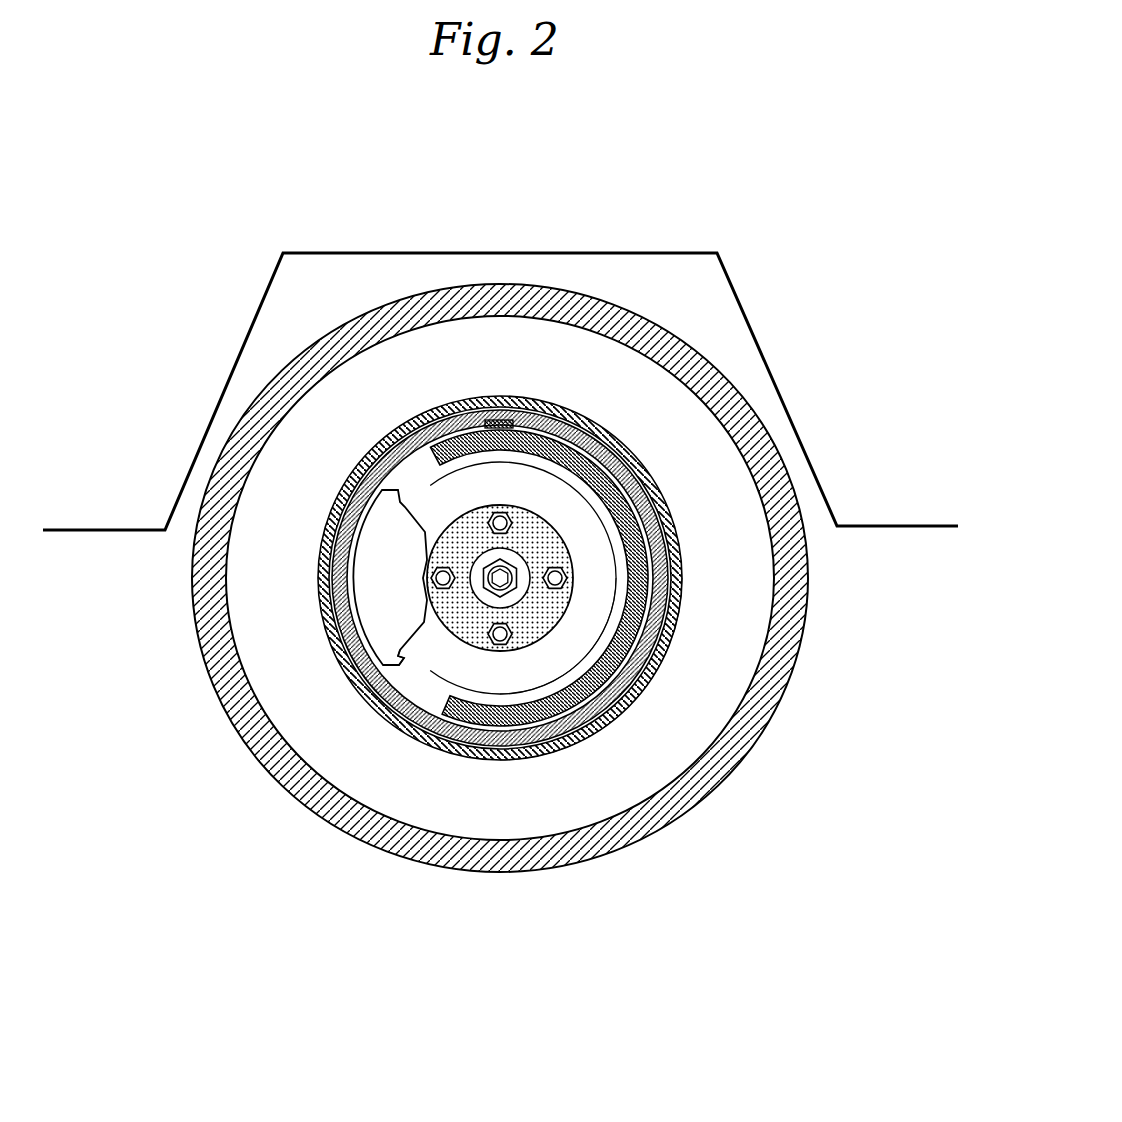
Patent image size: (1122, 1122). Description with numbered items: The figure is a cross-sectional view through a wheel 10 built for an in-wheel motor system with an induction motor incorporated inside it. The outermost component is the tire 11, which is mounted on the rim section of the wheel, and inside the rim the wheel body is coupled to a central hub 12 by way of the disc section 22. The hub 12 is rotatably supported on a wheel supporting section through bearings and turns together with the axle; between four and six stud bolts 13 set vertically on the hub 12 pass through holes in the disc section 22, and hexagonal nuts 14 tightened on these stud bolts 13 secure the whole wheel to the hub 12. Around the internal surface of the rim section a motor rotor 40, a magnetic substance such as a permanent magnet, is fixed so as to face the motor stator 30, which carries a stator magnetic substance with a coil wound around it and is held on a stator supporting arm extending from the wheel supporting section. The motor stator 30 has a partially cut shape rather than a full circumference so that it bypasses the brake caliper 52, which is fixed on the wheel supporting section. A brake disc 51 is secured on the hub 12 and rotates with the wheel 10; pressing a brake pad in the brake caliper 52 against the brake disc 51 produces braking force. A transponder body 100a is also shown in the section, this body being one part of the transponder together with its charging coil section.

The wheel 10 is at (430, 954).
The tire 11 is at (517, 868).
The hub 12 is at (458, 637).
The stud bolts 13 is at (512, 648).
The hexagonal nuts 14 is at (507, 650).
The disc section 22 is at (685, 578).
The motor stator 30 is at (487, 650).
The motor rotor 40 is at (672, 645).
The brake disc 51 is at (425, 653).
The brake caliper 52 is at (377, 577).
The transponder body 100a is at (515, 412).